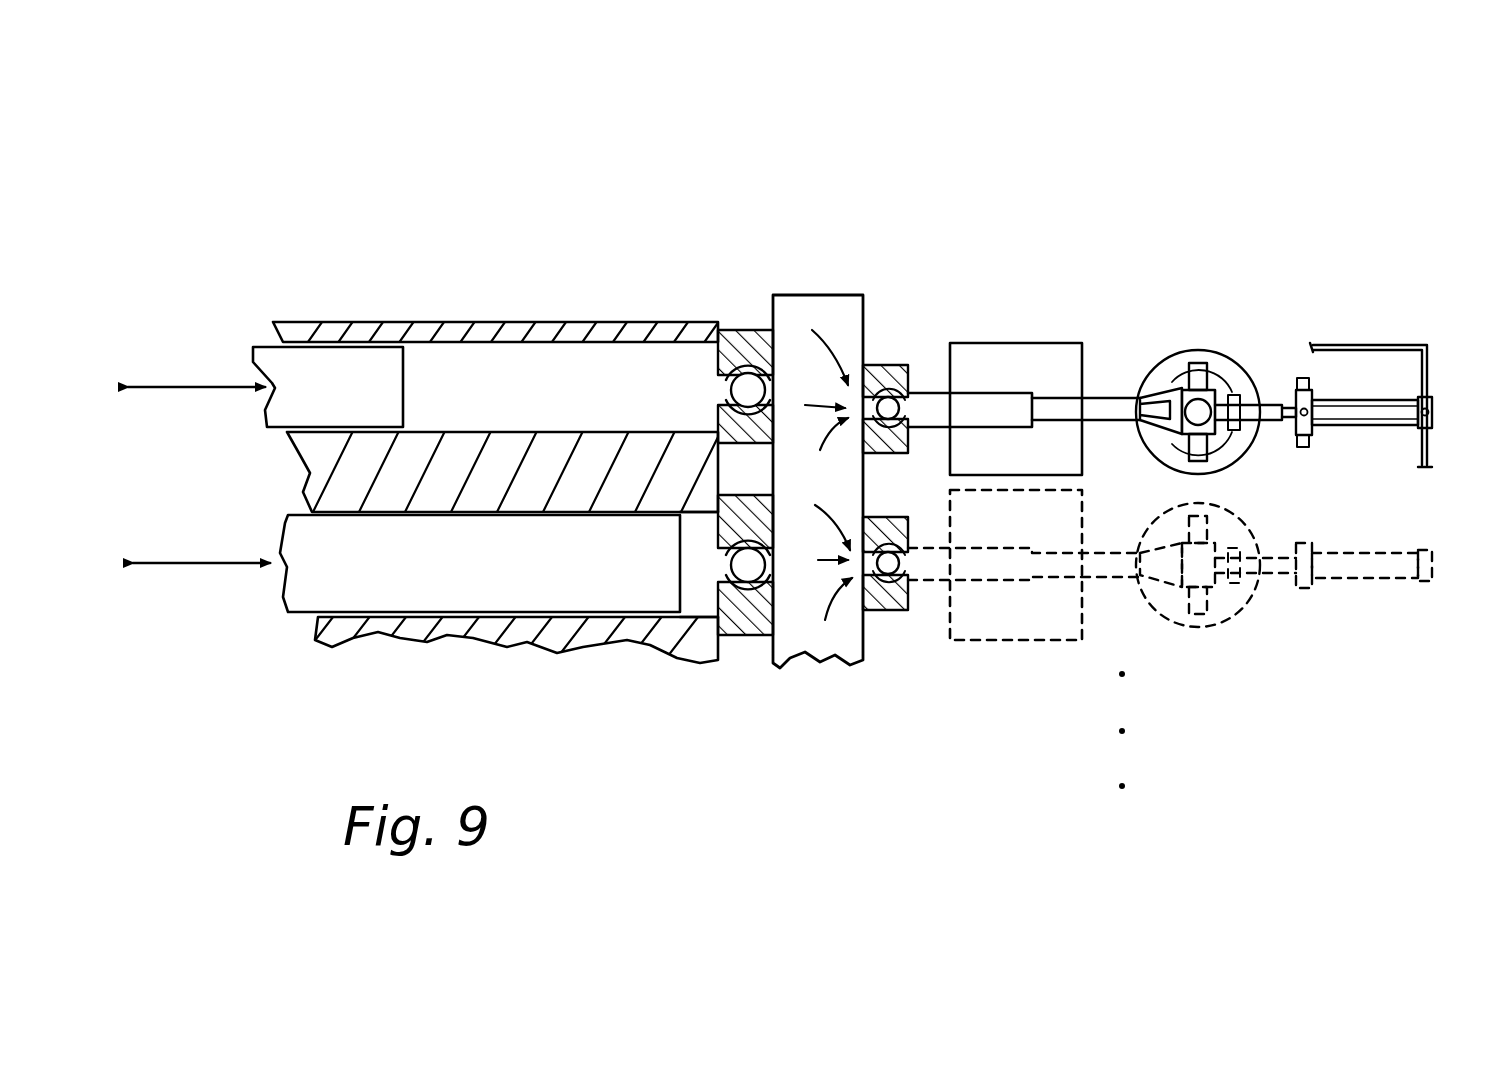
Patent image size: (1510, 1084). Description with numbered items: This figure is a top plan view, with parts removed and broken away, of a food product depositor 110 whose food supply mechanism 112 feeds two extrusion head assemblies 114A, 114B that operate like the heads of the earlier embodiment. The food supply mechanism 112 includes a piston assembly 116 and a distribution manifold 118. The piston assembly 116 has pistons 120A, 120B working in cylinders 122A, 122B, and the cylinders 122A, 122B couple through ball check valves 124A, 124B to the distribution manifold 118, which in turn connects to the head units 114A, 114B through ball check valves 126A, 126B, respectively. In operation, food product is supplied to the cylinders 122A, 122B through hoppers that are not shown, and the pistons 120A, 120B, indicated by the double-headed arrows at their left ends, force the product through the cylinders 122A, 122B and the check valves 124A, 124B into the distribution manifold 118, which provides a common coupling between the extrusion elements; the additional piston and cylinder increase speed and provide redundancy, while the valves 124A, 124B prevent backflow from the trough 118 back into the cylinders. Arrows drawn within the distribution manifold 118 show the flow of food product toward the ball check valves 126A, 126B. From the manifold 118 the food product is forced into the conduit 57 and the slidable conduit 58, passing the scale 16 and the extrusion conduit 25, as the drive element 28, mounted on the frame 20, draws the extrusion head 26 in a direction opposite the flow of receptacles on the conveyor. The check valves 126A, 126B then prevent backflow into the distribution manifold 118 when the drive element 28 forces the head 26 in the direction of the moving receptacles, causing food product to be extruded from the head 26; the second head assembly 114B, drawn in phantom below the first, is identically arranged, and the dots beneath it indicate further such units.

The food product depositor 110 is at (1277, 252).
The food supply mechanism 112 is at (762, 255).
The extrusion head assembly 114A is at (1018, 272).
The extrusion head assembly 114B is at (1245, 638).
The piston assembly 116 is at (580, 318).
The distribution manifold 118 is at (790, 665).
The piston 120A is at (305, 368).
The piston 120B is at (305, 535).
The cylinder 122A is at (520, 355).
The cylinder 122B is at (688, 592).
The ball check valve 124A is at (728, 330).
The ball check valve 124B is at (735, 645).
The ball check valve 126A is at (895, 360).
The ball check valve 126B is at (890, 620).
The scale 16 is at (1006, 378).
The frame 20 is at (1352, 345).
The extrusion conduit 25 is at (1060, 380).
The extrusion head 26 is at (1228, 432).
The extension/retraction actuator 28 is at (1372, 392).
The conduit 57 is at (1018, 398).
The slidable conduit 58 is at (1104, 425).